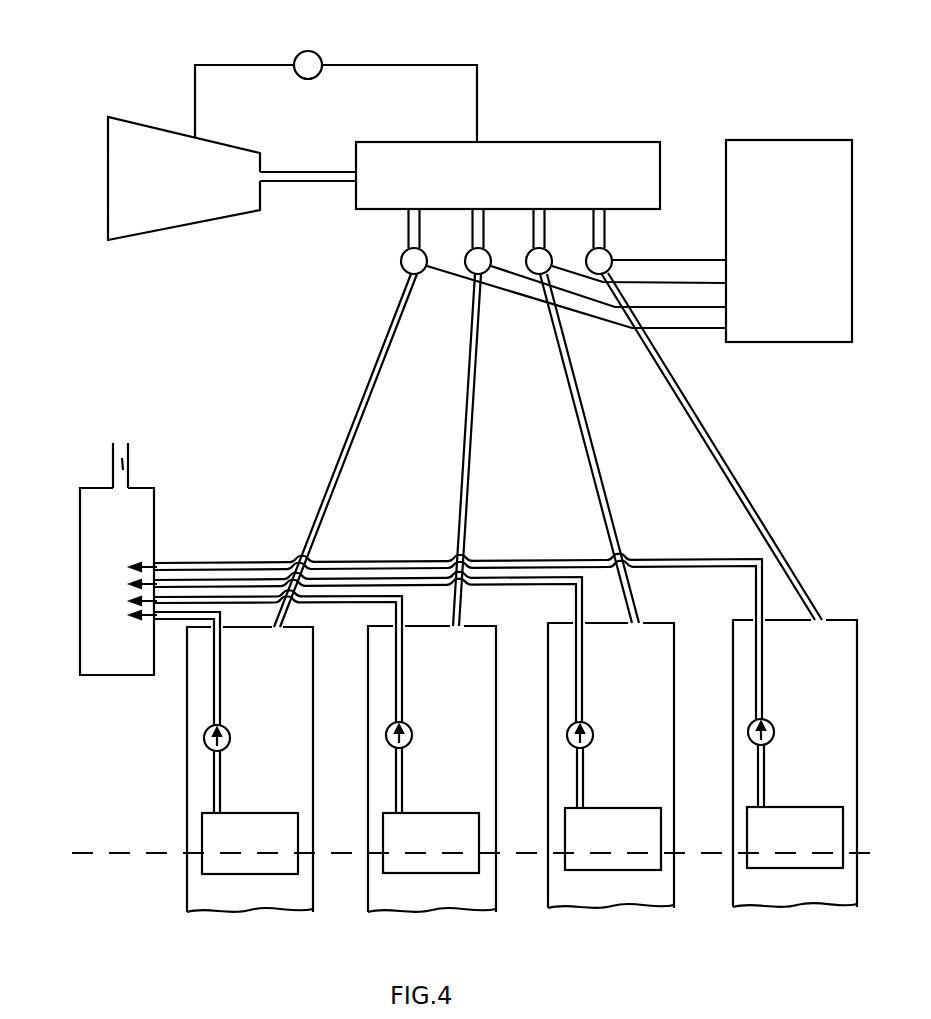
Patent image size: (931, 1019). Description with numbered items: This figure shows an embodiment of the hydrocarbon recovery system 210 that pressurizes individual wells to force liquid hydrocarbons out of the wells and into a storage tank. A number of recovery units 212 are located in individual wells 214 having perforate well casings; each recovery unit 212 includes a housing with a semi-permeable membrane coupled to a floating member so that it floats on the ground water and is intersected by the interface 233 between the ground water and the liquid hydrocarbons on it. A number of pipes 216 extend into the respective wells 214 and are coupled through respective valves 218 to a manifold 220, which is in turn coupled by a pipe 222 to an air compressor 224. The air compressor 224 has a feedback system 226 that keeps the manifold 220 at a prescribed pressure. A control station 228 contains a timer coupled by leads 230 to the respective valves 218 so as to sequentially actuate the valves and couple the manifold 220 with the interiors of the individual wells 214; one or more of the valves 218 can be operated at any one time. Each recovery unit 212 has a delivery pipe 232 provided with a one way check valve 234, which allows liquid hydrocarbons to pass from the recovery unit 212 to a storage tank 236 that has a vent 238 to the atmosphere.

The system 210 is at (645, 108).
The recovery unit 212 is at (812, 807).
The well 214 is at (733, 690).
The pipe 216 is at (668, 392).
The valve 218 is at (593, 251).
The manifold 220 is at (568, 150).
The pipe 222 is at (320, 181).
The air compressor 224 is at (190, 205).
The feedback system 226 is at (310, 62).
The control station 228 is at (798, 150).
The leads 230 is at (704, 328).
The delivery pipe 232 is at (252, 563).
The interface 233 is at (147, 853).
The one way check valve 234 is at (771, 722).
The storage tank 236 is at (107, 660).
The vent 238 is at (132, 460).